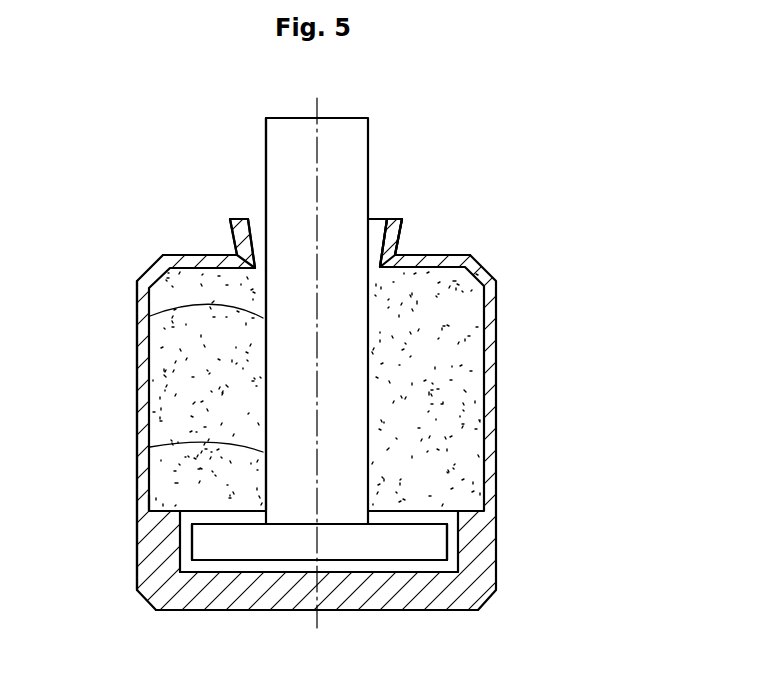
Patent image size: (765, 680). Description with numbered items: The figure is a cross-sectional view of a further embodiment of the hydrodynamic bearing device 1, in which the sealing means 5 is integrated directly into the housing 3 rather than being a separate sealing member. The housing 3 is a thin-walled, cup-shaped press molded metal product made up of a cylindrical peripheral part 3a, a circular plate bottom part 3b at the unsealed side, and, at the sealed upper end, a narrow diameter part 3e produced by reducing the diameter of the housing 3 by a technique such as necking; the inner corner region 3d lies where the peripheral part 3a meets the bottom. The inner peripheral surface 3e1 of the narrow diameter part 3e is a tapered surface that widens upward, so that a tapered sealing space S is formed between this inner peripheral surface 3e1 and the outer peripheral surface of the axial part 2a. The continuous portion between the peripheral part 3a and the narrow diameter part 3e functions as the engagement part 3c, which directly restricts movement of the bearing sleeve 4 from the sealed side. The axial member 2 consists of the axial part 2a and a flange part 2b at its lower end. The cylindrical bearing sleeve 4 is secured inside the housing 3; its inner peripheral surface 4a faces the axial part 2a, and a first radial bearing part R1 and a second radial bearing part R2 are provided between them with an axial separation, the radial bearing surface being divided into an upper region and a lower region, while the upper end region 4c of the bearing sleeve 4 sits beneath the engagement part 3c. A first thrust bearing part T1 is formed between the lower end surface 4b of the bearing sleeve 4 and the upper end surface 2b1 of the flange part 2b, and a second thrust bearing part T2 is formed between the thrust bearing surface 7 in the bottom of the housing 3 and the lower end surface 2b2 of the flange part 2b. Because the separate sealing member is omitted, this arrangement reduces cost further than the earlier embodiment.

The hydrodynamic bearing device 1 is at (536, 130).
The axial member 2 is at (347, 112).
The axial part 2a is at (274, 145).
The flange part 2b is at (277, 550).
The upper end surface of flange part 2b1 is at (203, 527).
The lower end surface of flange part 2b2 is at (225, 560).
The housing 3 is at (497, 383).
The peripheral part 3a is at (140, 374).
The bottom part 3b is at (345, 606).
The engagement part 3c is at (180, 258).
The housing inner corner 3d is at (157, 512).
The narrow diameter part 3e is at (394, 244).
The inner peripheral surface of narrow diameter part 3e1 is at (250, 218).
The bearing sleeve 4 is at (450, 343).
The inner peripheral surface of bearing sleeve 4a is at (266, 312).
The lower end surface of bearing sleeve 4b is at (398, 513).
The top surface of elastic body 4c is at (455, 257).
The sealing means 5 is at (393, 208).
The thrust bearing surface 7 is at (357, 568).
The first radial bearing part R1 is at (150, 316).
The second radial bearing part R2 is at (150, 447).
The sealing space S is at (378, 228).
The first thrust bearing part T1 is at (430, 518).
The second thrust bearing part T2 is at (430, 563).